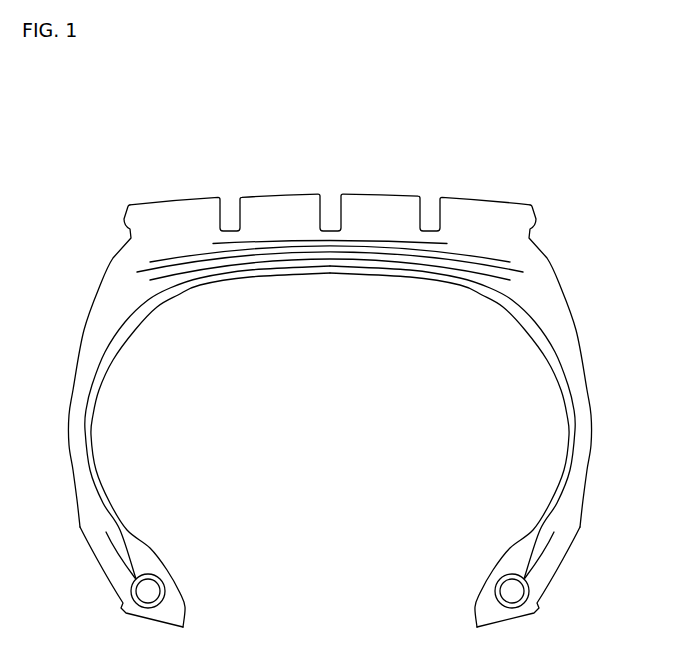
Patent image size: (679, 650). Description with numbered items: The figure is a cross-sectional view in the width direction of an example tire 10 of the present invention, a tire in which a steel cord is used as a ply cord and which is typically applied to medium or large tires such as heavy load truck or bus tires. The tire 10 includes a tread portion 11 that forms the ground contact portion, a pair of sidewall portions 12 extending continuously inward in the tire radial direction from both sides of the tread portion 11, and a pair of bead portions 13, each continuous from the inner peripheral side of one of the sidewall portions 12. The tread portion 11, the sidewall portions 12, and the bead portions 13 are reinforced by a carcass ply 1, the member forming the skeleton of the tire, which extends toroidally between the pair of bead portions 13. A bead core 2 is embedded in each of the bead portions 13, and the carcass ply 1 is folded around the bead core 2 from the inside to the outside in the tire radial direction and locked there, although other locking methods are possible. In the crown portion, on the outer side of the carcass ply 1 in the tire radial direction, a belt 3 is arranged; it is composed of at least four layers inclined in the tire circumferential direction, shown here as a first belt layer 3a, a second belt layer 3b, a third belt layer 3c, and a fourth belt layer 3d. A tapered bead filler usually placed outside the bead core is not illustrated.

The carcass ply 1 is at (569, 466).
The bead core 2 is at (500, 590).
The belt 3 is at (364, 114).
The first belt layer 3a is at (442, 261).
The second belt layer 3b is at (416, 253).
The third belt layer 3c is at (391, 247).
The fourth belt layer 3d is at (361, 241).
The tire 10 is at (578, 170).
The tread portion 11 is at (280, 197).
The sidewall portions 12 is at (588, 396).
The bead portions 13 is at (543, 589).